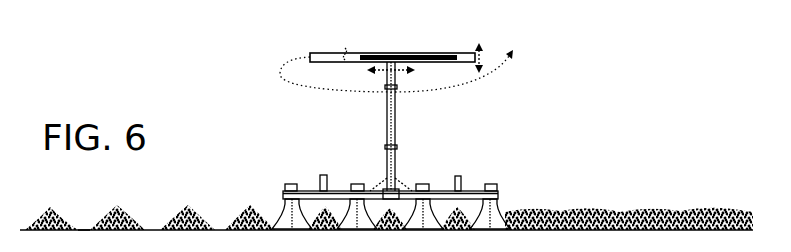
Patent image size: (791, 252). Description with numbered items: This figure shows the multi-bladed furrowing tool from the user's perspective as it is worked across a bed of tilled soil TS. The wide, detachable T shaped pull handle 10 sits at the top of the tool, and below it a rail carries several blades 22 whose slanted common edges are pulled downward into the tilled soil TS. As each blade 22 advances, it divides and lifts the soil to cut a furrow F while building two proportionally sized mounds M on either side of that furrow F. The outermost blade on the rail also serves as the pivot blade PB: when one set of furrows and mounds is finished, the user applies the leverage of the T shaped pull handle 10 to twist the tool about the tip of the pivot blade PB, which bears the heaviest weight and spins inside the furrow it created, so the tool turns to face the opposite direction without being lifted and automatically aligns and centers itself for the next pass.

The T shaped pull handle 10 is at (345, 57).
The blade 22 is at (274, 207).
The pivot blade PB is at (502, 206).
The tilled soil TS is at (700, 212).
The mound M is at (250, 207).
The furrow F is at (84, 220).